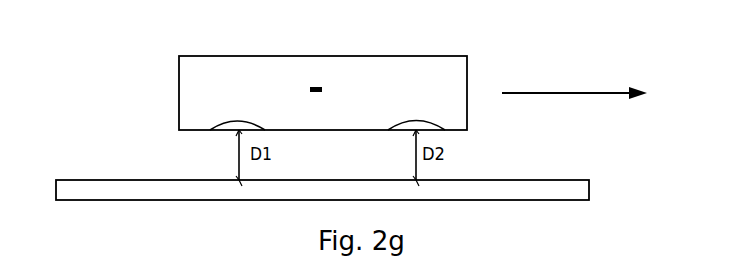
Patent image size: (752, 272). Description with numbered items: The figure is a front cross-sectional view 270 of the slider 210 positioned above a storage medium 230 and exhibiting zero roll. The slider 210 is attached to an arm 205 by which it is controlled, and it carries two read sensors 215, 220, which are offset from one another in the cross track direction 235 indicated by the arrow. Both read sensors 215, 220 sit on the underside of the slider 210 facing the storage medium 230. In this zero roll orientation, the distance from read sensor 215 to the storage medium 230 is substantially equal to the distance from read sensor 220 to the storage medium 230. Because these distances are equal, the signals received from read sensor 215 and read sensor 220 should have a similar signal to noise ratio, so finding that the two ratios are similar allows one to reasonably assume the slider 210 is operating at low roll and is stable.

The front cross-sectional view 270 is at (111, 89).
The slider 210 is at (338, 56).
The read sensor 215 is at (238, 123).
The read sensor 220 is at (412, 122).
The arm 205 is at (313, 93).
The storage medium 230 is at (120, 180).
The cross track direction 235 is at (566, 93).